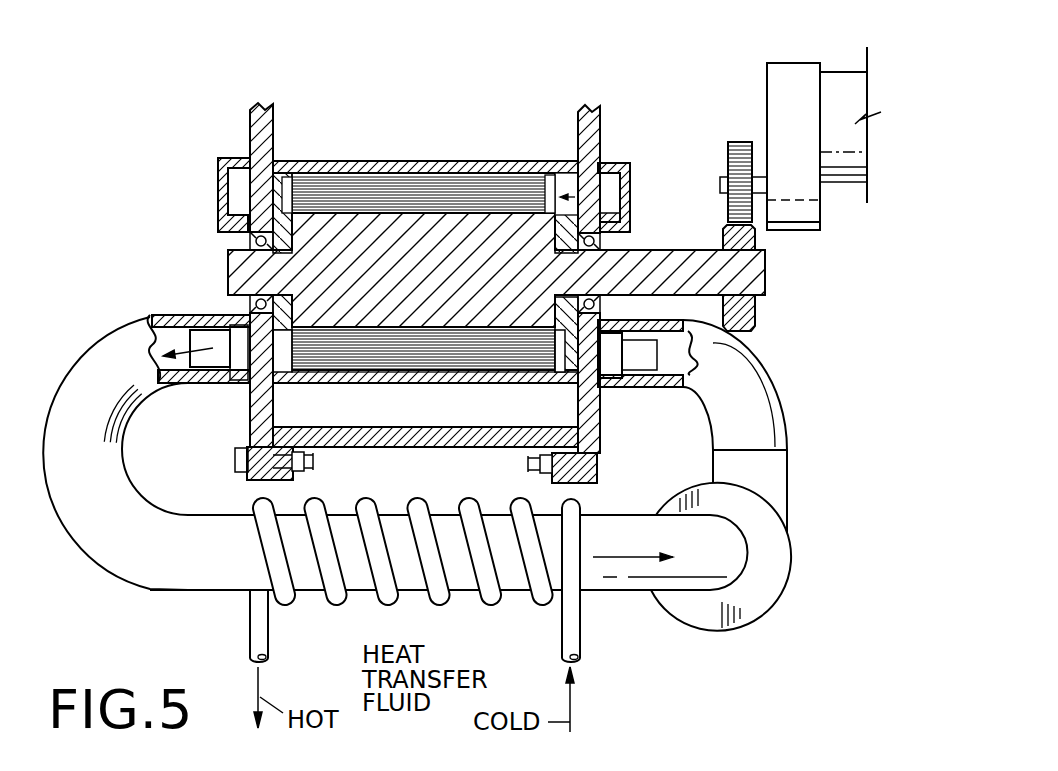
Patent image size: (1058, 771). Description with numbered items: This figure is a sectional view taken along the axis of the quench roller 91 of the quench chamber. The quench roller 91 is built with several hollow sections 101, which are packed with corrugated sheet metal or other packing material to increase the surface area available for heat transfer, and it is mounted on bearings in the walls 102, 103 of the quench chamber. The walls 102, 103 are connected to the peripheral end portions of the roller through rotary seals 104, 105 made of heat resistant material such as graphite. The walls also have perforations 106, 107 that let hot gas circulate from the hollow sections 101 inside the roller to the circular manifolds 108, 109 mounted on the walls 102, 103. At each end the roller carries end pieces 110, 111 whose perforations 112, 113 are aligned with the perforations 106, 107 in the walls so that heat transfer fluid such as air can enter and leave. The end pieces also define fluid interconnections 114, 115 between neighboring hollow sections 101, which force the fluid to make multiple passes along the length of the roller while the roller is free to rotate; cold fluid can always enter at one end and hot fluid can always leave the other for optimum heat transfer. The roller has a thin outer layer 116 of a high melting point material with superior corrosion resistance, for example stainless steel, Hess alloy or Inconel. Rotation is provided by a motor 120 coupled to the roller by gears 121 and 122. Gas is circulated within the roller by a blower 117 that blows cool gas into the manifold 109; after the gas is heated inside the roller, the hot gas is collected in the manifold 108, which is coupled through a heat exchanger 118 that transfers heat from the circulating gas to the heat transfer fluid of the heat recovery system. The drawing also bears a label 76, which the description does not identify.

The magnetic refrigeration apparatus 76 is at (415, 295).
The quench roller 91 is at (413, 150).
The hollow sections 101 is at (357, 193).
The wall 102 is at (258, 132).
The wall 103 is at (600, 127).
The rotary seal 104 is at (277, 158).
The rotary seal 105 is at (573, 163).
The perforations 106 is at (257, 192).
The perforations 107 is at (630, 165).
The circular manifold 108 is at (220, 193).
The circular manifold 109 is at (632, 193).
The end piece 110 is at (280, 222).
The end piece 111 is at (605, 228).
The perforations 112 is at (240, 328).
The perforations 113 is at (547, 177).
The fluid interconnection 114 is at (293, 197).
The fluid interconnection 115 is at (603, 350).
The thin outer layer 116 is at (452, 158).
The blower 117 is at (747, 600).
The heat exchanger 118 is at (263, 568).
The motor 120 is at (840, 93).
The gear 121 is at (740, 157).
The gear 122 is at (742, 310).